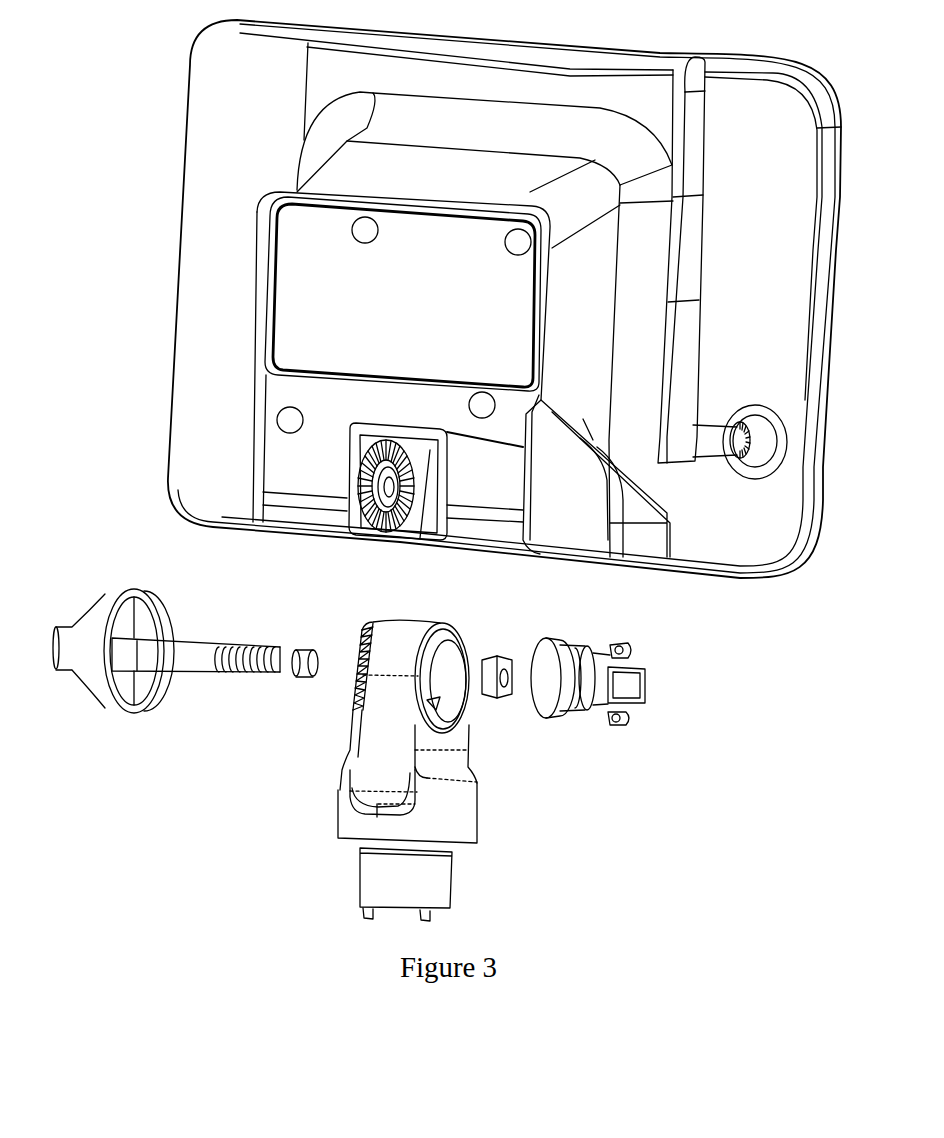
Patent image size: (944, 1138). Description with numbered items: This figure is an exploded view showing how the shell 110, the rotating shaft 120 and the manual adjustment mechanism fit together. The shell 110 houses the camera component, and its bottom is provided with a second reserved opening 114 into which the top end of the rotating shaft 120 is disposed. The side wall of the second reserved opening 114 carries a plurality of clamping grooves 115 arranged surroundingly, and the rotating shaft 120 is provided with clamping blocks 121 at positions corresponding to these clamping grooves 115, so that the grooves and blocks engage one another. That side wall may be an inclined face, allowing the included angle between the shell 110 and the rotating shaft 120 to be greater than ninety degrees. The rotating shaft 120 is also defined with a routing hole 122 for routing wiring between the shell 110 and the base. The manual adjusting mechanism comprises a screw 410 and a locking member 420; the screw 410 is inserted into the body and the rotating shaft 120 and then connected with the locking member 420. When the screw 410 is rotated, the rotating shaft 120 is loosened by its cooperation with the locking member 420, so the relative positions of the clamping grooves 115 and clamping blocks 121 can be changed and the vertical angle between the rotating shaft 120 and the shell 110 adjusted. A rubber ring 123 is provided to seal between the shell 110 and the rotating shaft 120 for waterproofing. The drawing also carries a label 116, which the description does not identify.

The shell 110 is at (207, 178).
The second reserved opening 114 is at (360, 447).
The clamping grooves 115 is at (373, 533).
The recess 116 is at (437, 530).
The rotating shaft 120 is at (452, 820).
The clamping block 121 is at (362, 632).
The routing hole 122 is at (460, 662).
The rubber ring 123 is at (560, 722).
The screw 410 is at (200, 660).
The locking member 420 is at (497, 698).